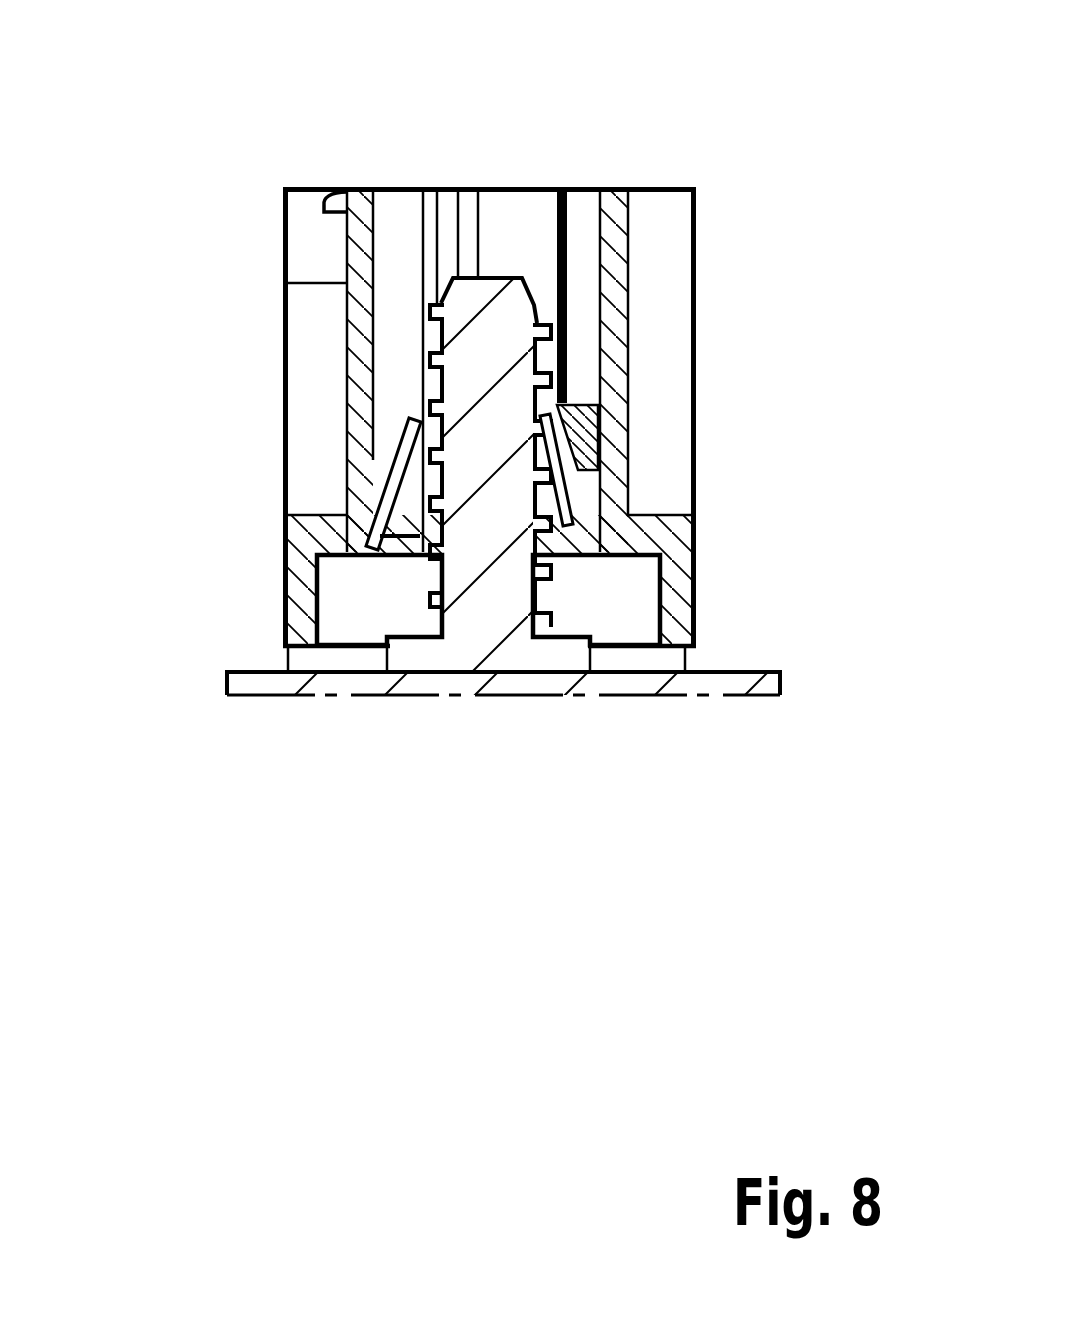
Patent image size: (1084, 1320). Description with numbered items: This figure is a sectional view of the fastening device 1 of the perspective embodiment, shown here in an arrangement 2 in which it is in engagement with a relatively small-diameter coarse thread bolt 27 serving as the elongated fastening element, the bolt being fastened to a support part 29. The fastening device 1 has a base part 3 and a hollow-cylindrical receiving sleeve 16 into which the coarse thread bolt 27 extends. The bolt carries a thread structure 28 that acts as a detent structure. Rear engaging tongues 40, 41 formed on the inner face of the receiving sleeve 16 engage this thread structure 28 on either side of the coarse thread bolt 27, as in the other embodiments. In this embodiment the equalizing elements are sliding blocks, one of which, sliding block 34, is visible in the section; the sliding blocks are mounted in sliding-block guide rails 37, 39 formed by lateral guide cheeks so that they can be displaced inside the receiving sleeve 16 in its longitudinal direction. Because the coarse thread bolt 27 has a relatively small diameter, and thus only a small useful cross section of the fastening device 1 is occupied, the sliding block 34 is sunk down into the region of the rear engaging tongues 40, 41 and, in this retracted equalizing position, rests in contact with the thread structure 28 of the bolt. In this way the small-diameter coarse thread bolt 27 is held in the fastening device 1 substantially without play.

The fastening device 1 is at (488, 143).
The fastening arrangement 2 is at (233, 137).
The base part 3 is at (673, 565).
The receiving sleeve 16 is at (613, 258).
The coarse thread bolt 27 is at (503, 308).
The thread structure 28 is at (535, 325).
The support part 29 is at (302, 683).
The sliding block 34 is at (580, 437).
The sliding-block guide rail 37 is at (580, 340).
The sliding-block guide rail 39 is at (450, 230).
The rear engaging tongue 40 is at (397, 447).
The rear engaging tongue 41 is at (555, 500).